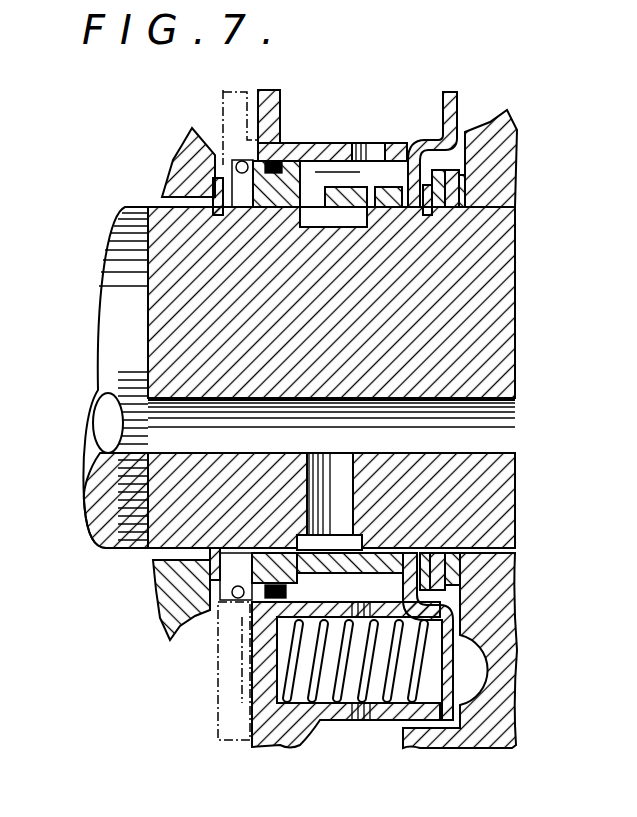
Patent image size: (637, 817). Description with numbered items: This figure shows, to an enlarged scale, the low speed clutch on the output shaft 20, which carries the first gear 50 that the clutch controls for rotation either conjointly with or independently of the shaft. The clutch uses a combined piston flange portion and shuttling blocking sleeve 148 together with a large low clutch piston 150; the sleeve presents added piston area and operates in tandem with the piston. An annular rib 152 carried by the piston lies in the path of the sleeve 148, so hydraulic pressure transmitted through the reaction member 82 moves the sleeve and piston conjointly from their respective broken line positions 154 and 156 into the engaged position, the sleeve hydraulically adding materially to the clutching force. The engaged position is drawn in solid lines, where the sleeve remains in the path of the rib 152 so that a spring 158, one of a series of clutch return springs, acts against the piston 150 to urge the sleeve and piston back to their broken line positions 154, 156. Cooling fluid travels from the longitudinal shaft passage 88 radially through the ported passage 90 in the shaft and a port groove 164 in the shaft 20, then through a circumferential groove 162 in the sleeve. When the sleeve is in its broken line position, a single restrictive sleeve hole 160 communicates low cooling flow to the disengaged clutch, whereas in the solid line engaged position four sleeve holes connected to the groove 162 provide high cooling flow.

The output shaft 20 is at (123, 235).
The first gear 50 is at (507, 625).
The reaction member 82 is at (190, 148).
The longitudinal shaft passage 88 is at (100, 418).
The ported passage 90 is at (340, 493).
The sleeve 148 is at (245, 222).
The low clutch piston 150 is at (282, 90).
The annular rib 152 is at (315, 172).
The broken line position of the sleeve 154 is at (213, 166).
The broken line position of the piston 156 is at (220, 140).
The spring 158 is at (307, 703).
The restrictive sleeve hole 160 is at (370, 207).
The circumferential groove 162 is at (309, 227).
The port groove 164 is at (300, 545).